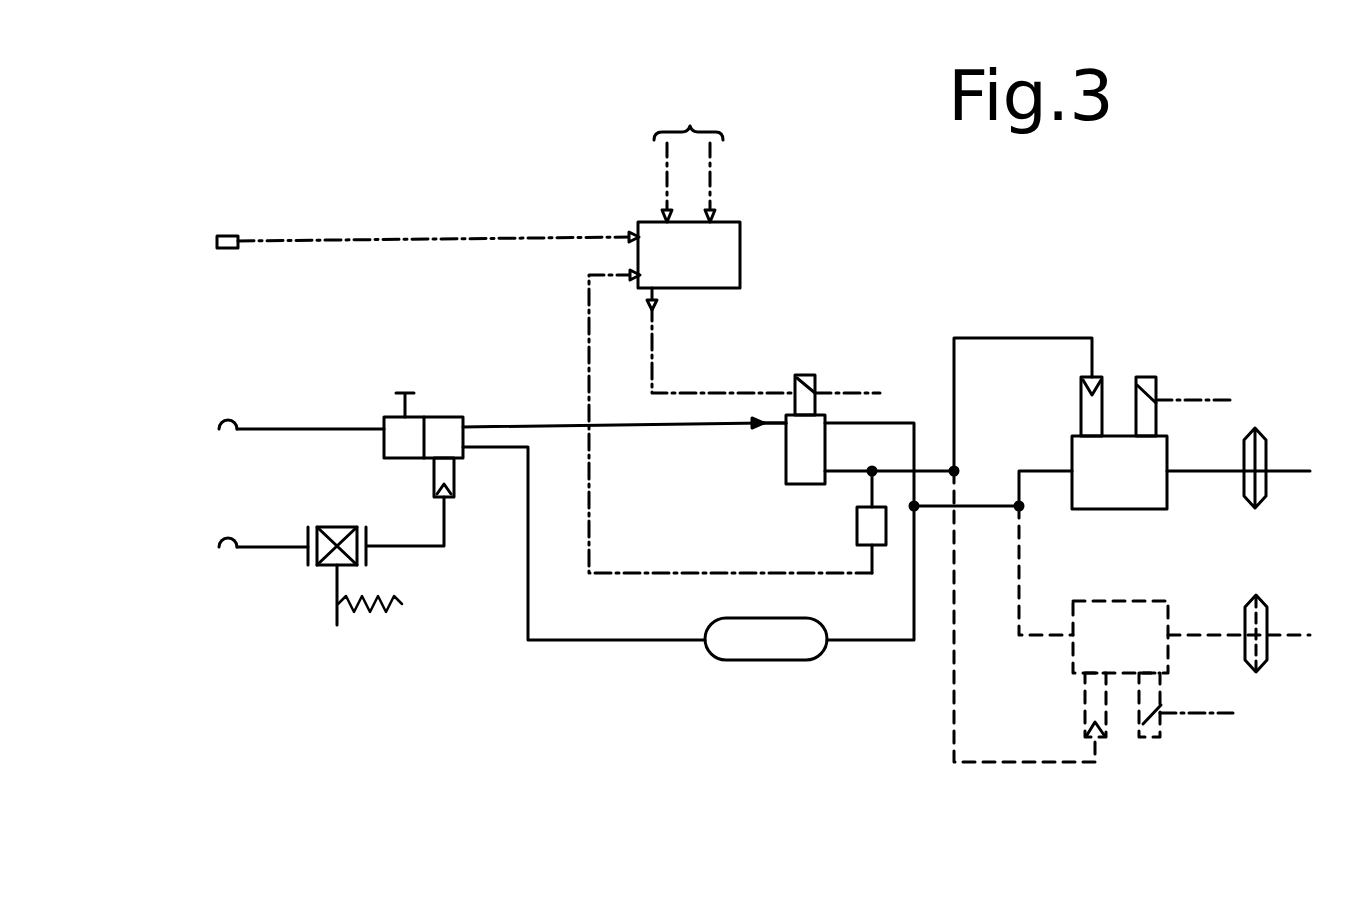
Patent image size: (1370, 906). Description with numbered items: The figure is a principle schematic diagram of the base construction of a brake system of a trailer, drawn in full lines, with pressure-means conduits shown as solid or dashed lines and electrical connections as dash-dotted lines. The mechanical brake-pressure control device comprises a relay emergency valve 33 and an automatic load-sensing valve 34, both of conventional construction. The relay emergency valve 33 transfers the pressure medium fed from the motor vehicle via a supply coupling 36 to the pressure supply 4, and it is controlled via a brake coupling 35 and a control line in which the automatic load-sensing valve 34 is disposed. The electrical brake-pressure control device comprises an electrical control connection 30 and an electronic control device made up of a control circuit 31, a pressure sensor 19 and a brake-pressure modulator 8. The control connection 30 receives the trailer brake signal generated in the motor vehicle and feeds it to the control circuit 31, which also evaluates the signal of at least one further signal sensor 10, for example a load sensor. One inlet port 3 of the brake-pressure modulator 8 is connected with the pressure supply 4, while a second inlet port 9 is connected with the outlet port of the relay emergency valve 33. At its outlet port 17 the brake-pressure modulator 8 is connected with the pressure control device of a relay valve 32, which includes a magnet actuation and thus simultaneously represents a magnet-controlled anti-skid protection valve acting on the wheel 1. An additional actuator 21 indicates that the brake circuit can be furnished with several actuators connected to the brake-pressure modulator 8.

The front wheel 1 is at (1255, 430).
The inlet port 3 is at (825, 422).
The pressure supply 4 is at (762, 643).
The brake-pressure modulator 8 is at (822, 348).
The second inlet port 9 is at (776, 420).
The signal sensor 10 is at (691, 126).
The outlet port 17 is at (826, 476).
The pressure sensor 19 is at (875, 530).
The additional actuator 21 is at (1268, 645).
The electrical control connection 30 is at (227, 238).
The control circuit 31 is at (670, 255).
The relay valve 32 is at (1127, 467).
The relay emergency valve 33 is at (457, 445).
The automatic load-sensing valve 34 is at (338, 558).
The brake coupling 35 is at (228, 545).
The supply coupling 36 is at (228, 425).